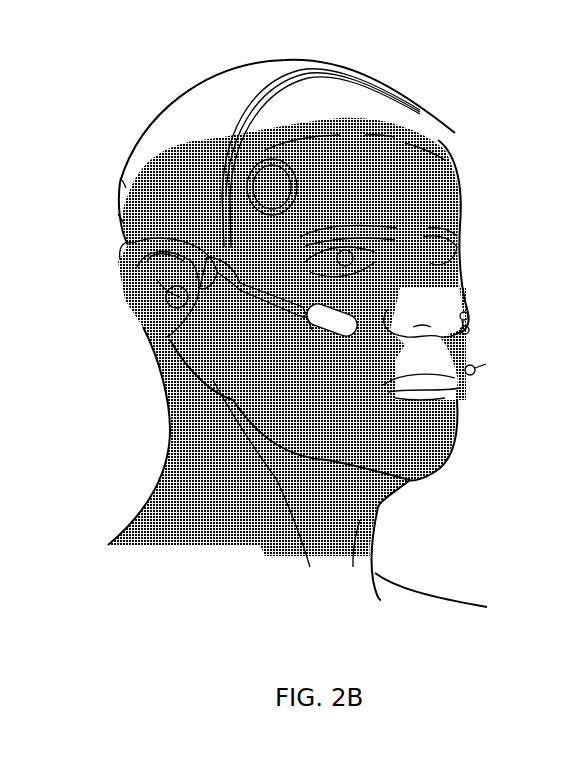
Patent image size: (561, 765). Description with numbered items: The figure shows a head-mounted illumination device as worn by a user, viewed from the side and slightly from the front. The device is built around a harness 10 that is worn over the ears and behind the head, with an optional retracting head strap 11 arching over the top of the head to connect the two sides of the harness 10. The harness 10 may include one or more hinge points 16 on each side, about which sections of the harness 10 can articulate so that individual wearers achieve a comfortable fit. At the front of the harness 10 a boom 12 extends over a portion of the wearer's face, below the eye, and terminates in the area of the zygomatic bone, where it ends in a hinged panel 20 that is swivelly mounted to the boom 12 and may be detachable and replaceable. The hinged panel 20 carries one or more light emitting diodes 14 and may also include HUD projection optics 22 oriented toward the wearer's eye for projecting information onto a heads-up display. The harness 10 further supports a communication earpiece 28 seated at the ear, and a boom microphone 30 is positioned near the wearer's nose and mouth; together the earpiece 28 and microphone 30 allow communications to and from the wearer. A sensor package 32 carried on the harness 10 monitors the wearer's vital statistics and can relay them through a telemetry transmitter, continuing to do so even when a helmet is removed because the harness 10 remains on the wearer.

The harness 10 is at (118, 262).
The retracting head strap 11 is at (258, 110).
The boom 12 is at (280, 310).
The light emitting diodes 14 is at (315, 330).
The hinge points 16 is at (120, 218).
The hinged panel 20 is at (317, 323).
The HUD projection optics 22 is at (342, 333).
The communication earpiece 28 is at (160, 321).
The boom microphone 30 is at (478, 372).
The sensor package 32 is at (283, 175).